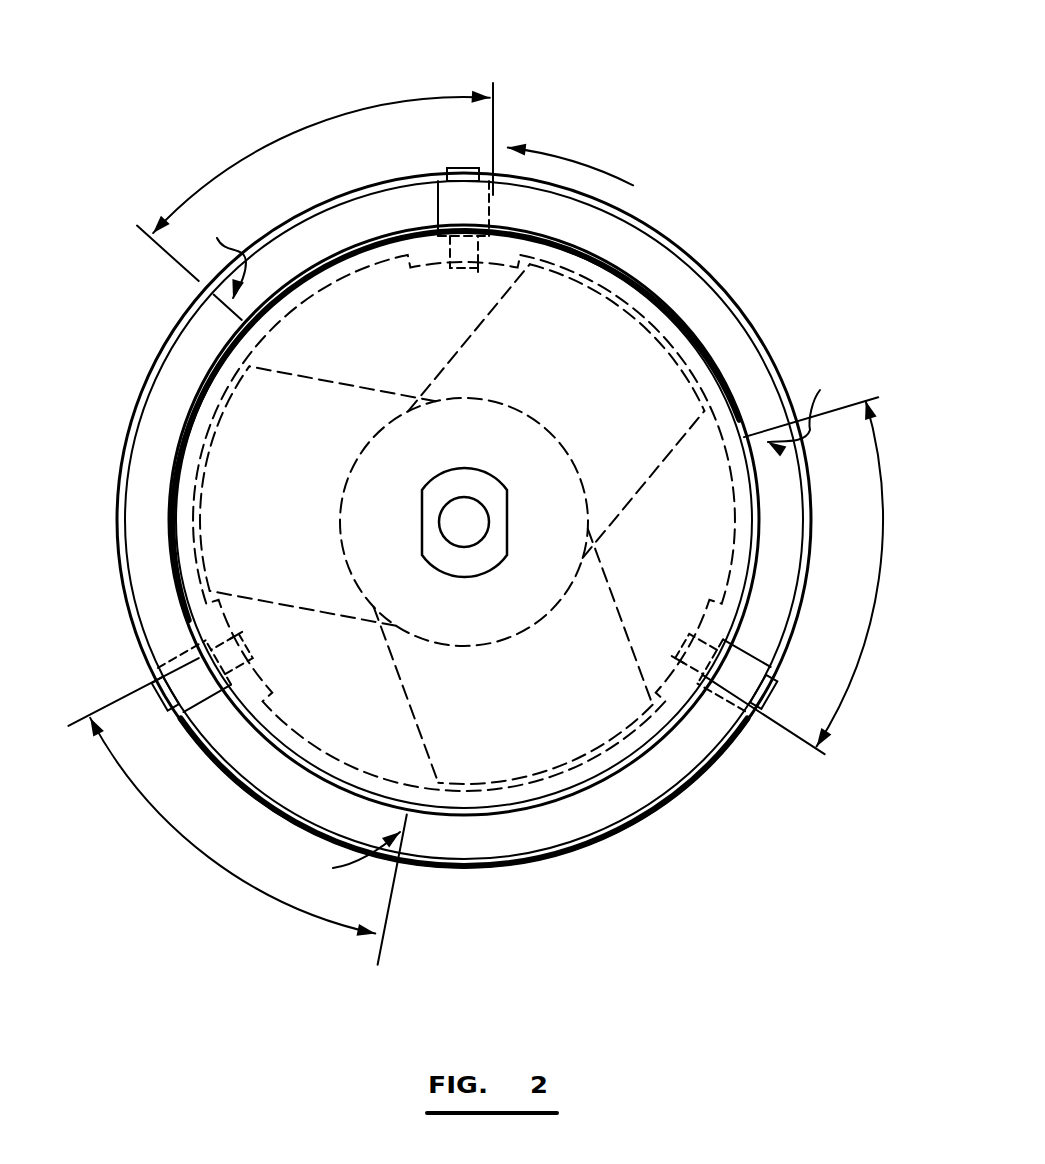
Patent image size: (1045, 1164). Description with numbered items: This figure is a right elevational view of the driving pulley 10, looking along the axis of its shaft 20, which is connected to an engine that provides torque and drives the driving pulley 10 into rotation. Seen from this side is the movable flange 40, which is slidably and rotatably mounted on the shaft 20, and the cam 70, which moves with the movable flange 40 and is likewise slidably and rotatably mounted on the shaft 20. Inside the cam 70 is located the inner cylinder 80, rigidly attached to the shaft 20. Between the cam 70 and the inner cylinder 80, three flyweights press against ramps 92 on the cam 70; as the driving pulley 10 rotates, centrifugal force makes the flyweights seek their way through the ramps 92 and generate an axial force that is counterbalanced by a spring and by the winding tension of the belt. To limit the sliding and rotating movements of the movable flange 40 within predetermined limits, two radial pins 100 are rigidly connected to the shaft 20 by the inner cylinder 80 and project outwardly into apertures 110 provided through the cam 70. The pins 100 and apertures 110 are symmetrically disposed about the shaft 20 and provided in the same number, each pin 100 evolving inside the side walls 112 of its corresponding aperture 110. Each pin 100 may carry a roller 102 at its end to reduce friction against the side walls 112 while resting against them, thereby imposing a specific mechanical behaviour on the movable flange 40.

The driving pulley 10 is at (625, 97).
The shaft 20 is at (470, 470).
The movable flange 40 is at (778, 356).
The cam 70 is at (728, 300).
The inner cylinder 80 is at (712, 362).
The ramps 92 is at (602, 392).
The radial pins 100 is at (770, 690).
The roller 102 is at (440, 191).
The apertures 110 is at (495, 524).
The side walls 112 is at (508, 550).